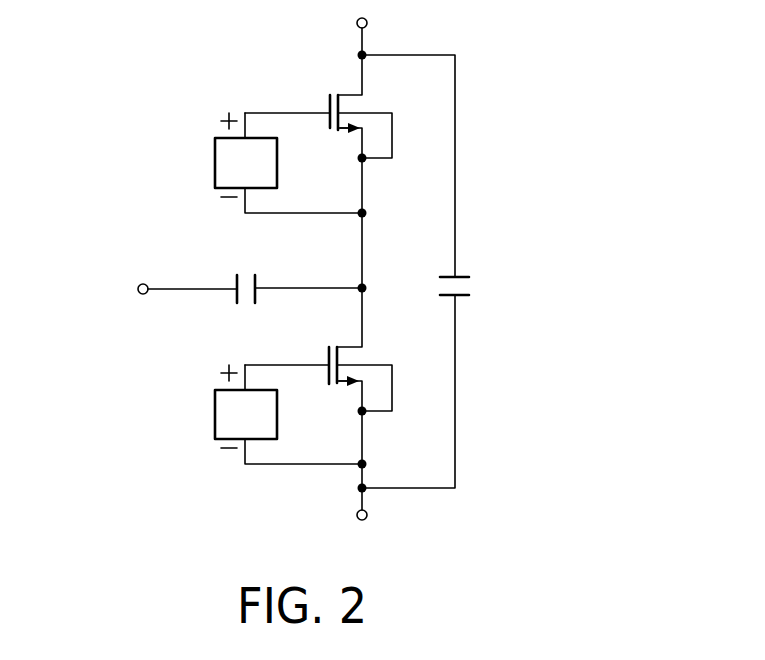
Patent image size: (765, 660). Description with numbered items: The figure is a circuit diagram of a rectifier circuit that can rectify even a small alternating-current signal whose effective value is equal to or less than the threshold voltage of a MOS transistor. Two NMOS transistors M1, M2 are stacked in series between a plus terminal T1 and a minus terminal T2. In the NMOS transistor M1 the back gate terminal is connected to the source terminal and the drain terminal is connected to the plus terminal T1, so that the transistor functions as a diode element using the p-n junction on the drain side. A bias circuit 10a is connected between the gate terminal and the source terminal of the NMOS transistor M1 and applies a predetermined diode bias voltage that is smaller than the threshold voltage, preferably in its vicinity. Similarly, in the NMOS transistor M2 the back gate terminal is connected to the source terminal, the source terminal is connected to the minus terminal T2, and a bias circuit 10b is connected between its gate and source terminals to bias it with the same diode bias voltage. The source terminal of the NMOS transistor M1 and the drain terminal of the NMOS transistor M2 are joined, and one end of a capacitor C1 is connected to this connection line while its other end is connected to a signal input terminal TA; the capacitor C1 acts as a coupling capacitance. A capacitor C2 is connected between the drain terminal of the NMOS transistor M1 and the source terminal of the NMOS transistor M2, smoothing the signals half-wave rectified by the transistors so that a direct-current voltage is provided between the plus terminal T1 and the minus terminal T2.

The plus terminal T1 is at (371, 23).
The minus terminal T2 is at (371, 515).
The signal input terminal TA is at (138, 289).
The NMOS transistor M1 is at (345, 91).
The NMOS transistor M2 is at (343, 342).
The bias circuit 10a is at (215, 162).
The bias circuit 10b is at (215, 413).
The capacitor C1 is at (242, 270).
The capacitor C2 is at (472, 289).